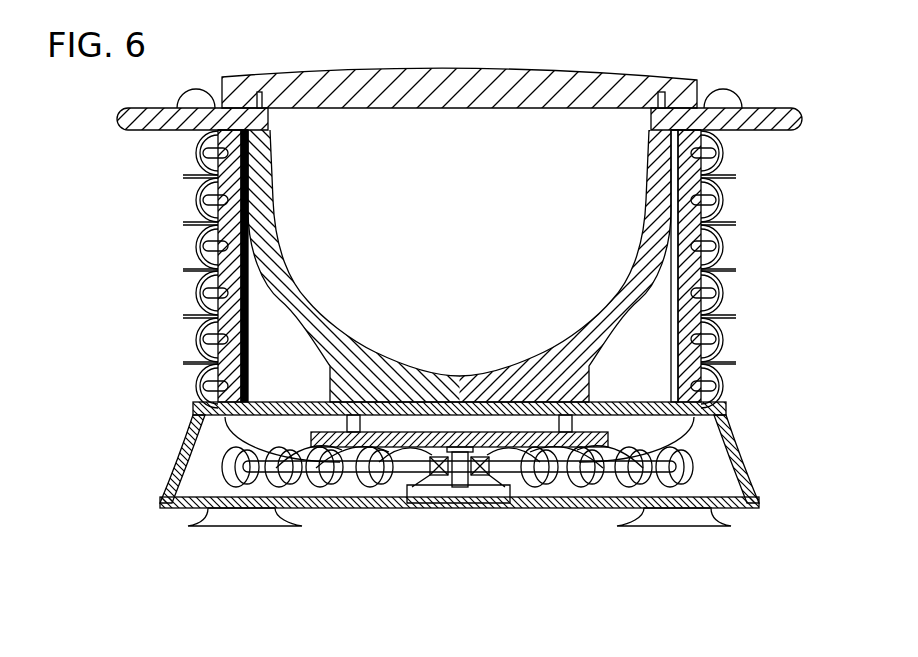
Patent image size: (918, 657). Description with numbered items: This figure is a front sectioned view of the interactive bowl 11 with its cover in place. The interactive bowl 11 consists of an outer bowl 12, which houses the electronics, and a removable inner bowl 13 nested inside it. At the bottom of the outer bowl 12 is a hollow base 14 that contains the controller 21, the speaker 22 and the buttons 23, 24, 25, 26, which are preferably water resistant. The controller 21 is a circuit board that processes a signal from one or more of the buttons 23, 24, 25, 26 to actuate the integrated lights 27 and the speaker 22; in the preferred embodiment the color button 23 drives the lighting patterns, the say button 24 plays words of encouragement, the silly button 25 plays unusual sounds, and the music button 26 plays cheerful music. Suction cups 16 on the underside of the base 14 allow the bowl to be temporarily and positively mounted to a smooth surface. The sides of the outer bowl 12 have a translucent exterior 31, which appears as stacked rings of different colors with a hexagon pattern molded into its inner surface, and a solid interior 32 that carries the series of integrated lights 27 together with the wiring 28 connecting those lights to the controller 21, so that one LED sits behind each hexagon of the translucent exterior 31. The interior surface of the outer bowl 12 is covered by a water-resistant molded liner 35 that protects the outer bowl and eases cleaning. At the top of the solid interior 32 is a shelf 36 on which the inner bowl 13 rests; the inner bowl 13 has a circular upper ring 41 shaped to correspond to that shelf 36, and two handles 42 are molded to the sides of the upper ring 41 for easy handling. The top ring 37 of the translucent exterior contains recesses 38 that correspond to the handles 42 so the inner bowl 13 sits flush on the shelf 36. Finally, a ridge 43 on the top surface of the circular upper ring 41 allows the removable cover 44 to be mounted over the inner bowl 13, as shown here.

The interactive bowl 11 is at (786, 62).
The outer bowl 12 is at (744, 387).
The removable inner bowl 13 is at (651, 232).
The hollow base 14 is at (736, 457).
The suction cups 16 is at (243, 530).
The controller 21 is at (430, 440).
The speaker 22 is at (445, 503).
The color button 23 is at (672, 473).
The say button 24 is at (632, 473).
The silly button 25 is at (588, 473).
The music button 26 is at (543, 473).
The integrated lights 27 is at (712, 153).
The wiring 28 is at (237, 433).
The translucent exterior 31 is at (175, 200).
The solid interior 32 is at (223, 268).
The liner 35 is at (244, 335).
The shelf 36 is at (233, 130).
The top ring 37 is at (191, 90).
The recesses 38 is at (197, 103).
The circular upper ring 41 is at (247, 129).
The handles 42 is at (120, 119).
The ridge 43 is at (660, 92).
The removable cover 44 is at (488, 82).